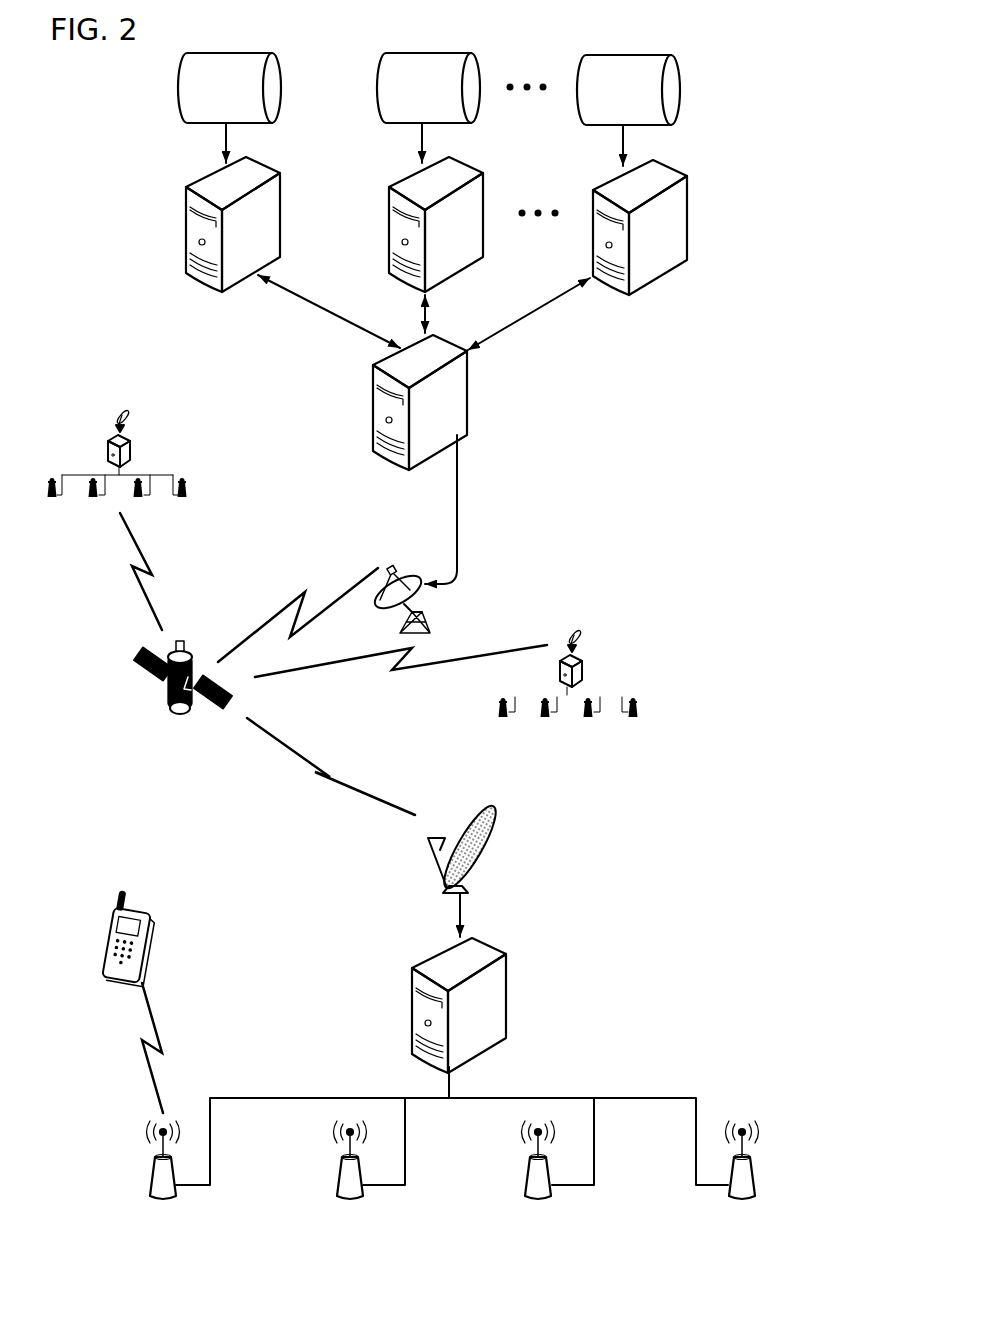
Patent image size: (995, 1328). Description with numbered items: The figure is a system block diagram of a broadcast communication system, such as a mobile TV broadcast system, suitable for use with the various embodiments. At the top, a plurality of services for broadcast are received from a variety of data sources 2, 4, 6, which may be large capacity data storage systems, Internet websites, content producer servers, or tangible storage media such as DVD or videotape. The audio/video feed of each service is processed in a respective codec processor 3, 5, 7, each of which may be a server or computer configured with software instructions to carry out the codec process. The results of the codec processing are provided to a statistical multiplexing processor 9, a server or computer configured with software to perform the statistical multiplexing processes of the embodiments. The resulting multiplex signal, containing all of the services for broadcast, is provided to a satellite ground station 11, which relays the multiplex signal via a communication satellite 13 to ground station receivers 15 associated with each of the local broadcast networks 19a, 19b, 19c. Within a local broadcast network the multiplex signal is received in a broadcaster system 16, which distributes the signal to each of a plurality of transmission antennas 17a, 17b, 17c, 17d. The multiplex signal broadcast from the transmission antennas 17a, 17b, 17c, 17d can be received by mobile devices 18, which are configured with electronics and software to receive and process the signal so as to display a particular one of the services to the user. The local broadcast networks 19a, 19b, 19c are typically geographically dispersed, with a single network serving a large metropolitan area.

The data source 2 is at (271, 54).
The data source 4 is at (470, 54).
The data source 6 is at (670, 56).
The codec processor 3 is at (280, 173).
The codec processor 5 is at (483, 173).
The codec processor 7 is at (688, 176).
The statistical multiplexing processor 9 is at (444, 341).
The satellite ground station 11 is at (413, 522).
The communication satellite 13 is at (187, 646).
The ground station receiver 15 is at (464, 815).
The broadcaster system 16 is at (500, 952).
The transmission antenna 17a is at (152, 1173).
The transmission antenna 17b is at (341, 1173).
The transmission antenna 17c is at (529, 1174).
The transmission antenna 17d is at (753, 1170).
The mobile device 18 is at (146, 920).
The local broadcast network 19a is at (628, 838).
The local broadcast network 19b is at (625, 637).
The local broadcast network 19c is at (166, 432).